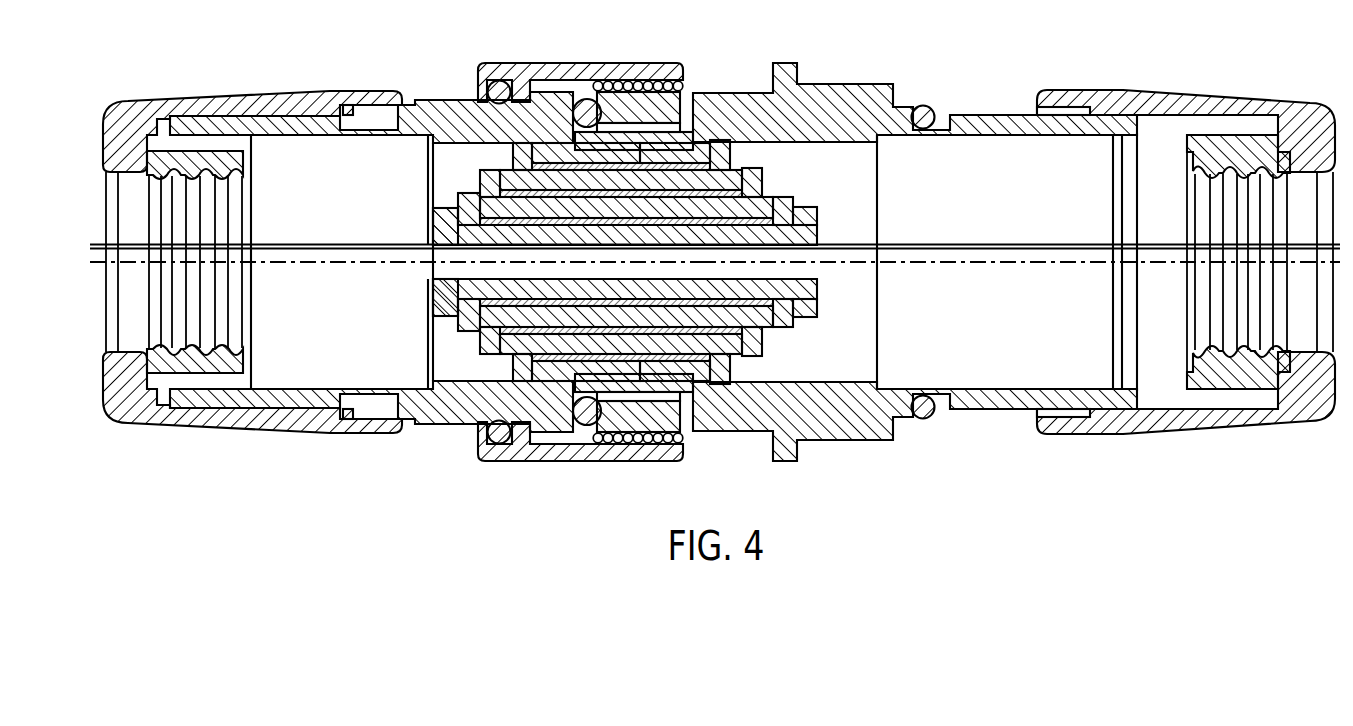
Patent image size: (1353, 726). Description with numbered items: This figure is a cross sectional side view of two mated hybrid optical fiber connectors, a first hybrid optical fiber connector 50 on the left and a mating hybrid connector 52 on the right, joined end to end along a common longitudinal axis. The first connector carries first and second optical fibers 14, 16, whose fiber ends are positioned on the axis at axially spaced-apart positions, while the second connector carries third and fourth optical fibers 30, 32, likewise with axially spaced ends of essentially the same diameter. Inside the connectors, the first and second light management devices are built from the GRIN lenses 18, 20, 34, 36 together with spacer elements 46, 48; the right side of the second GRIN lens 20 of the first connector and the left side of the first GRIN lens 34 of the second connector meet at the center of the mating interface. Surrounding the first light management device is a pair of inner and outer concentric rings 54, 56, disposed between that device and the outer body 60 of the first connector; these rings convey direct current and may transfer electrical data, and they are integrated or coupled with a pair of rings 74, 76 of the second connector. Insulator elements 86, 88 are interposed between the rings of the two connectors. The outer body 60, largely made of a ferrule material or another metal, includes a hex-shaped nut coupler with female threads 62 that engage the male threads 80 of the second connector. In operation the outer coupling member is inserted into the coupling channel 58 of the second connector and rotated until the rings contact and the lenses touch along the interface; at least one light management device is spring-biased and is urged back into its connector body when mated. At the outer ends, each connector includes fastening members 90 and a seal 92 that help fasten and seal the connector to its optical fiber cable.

The first optical fiber 14 is at (298, 268).
The second optical fiber 16 is at (347, 244).
The first GRIN lens 18 is at (432, 222).
The second GRIN lens 20 is at (603, 252).
The third optical fiber 30 is at (1025, 245).
The fourth optical fiber 32 is at (971, 267).
The first GRIN lens 34 is at (643, 252).
The second GRIN lens 36 is at (757, 252).
The spacer element 46 is at (480, 252).
The spacer element 48 is at (712, 252).
The first hybrid optical fiber connector 50 is at (418, 74).
The mating hybrid connector 52 is at (1006, 74).
The inner concentric ring 54 is at (450, 338).
The outer concentric ring 56 is at (505, 348).
The coupling channel 58 is at (683, 122).
The outer body 60 is at (612, 140).
The female threads 62 is at (612, 447).
The ring 74 is at (790, 328).
The ring 76 is at (730, 358).
The male threads 80 is at (600, 432).
The insulator element 86 is at (443, 288).
The insulator element 88 is at (808, 293).
The fastening member 90 is at (1305, 116).
The seal 92 is at (1227, 140).